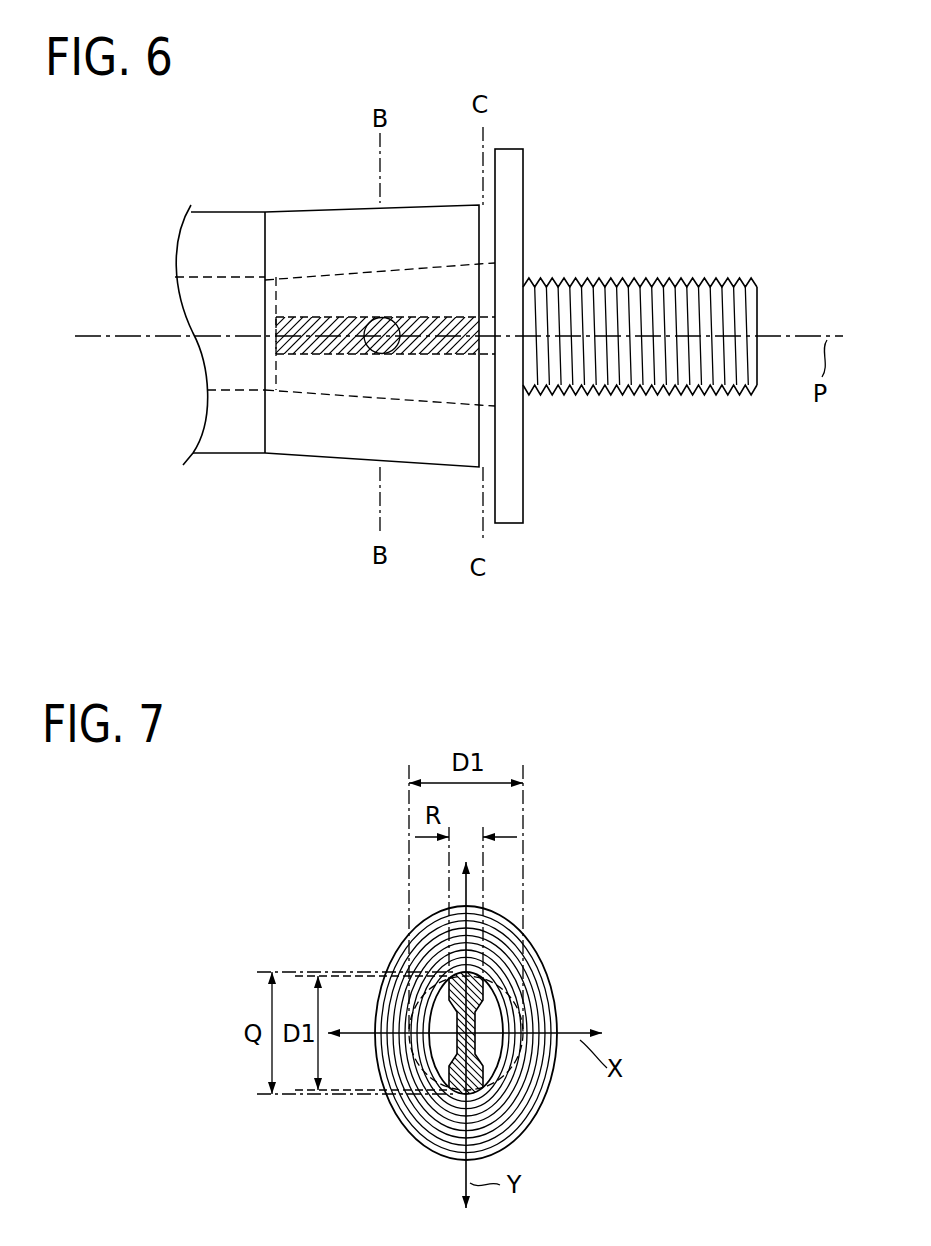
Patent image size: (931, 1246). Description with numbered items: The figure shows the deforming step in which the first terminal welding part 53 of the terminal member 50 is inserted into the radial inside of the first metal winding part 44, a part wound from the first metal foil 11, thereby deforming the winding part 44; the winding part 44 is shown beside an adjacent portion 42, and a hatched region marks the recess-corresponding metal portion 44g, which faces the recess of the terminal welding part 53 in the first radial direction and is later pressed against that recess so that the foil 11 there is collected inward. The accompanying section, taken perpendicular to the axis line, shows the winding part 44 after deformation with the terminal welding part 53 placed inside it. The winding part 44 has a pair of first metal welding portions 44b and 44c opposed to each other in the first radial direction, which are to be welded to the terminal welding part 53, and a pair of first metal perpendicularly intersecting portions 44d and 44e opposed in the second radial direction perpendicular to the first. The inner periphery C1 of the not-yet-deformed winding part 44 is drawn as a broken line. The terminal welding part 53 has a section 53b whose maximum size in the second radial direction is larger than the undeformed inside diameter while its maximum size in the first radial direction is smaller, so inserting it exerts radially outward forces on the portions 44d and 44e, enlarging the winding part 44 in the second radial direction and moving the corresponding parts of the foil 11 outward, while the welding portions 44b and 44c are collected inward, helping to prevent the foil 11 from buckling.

In FIG. 7, the first metal foil 11 is at (403, 953).
In FIG. 6, the shaft body 42 is at (204, 227).
In FIG. 6, the first metal winding part 44 is at (288, 225).
In FIG. 7, the first metal winding part 44 is at (542, 992).
In FIG. 7, the first metal welding portion 44b is at (372, 1040).
In FIG. 6, the first metal welding portion 44c is at (370, 345).
In FIG. 7, the first metal welding portion 44c is at (556, 1052).
In FIG. 7, the first metal perpendicularly intersecting portion 44d is at (478, 922).
In FIG. 7, the first metal perpendicularly intersecting portion 44e is at (453, 1137).
In FIG. 6, the recess-corresponding metal portion 44g is at (426, 340).
In FIG. 6, the terminal member 50 is at (632, 297).
In FIG. 6, the first terminal welding part 53 is at (420, 292).
In FIG. 7, the first terminal welding part 53 is at (503, 1022).
In FIG. 7, the section 53b is at (493, 1135).
In FIG. 7, the inner periphery C1 is at (493, 1113).